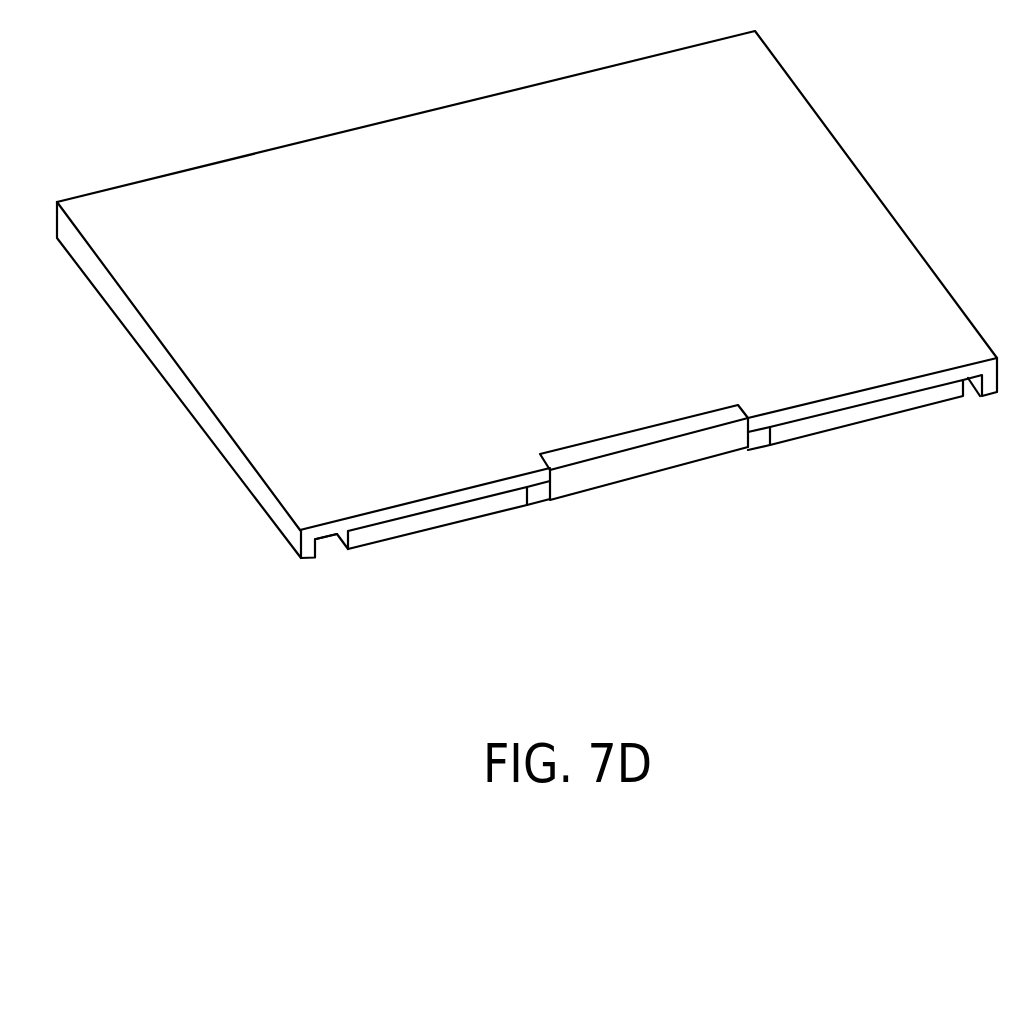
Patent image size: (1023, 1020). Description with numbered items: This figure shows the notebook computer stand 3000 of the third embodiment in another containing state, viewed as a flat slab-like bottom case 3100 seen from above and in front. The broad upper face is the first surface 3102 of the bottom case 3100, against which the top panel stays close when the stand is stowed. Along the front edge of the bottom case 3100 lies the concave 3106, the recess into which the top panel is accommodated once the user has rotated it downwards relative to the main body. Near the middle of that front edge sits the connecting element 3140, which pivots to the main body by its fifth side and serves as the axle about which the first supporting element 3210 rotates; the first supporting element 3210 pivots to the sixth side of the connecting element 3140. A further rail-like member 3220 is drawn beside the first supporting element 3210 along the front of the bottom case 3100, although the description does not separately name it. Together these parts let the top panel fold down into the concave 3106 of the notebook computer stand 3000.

The notebook computer stand 3000 is at (988, 673).
The bottom case 3100 is at (800, 102).
The first surface 3102 is at (597, 103).
The concave 3106 is at (332, 550).
The connecting element 3140 is at (662, 459).
The first supporting element 3210 is at (758, 442).
The rail member 3220 is at (855, 417).